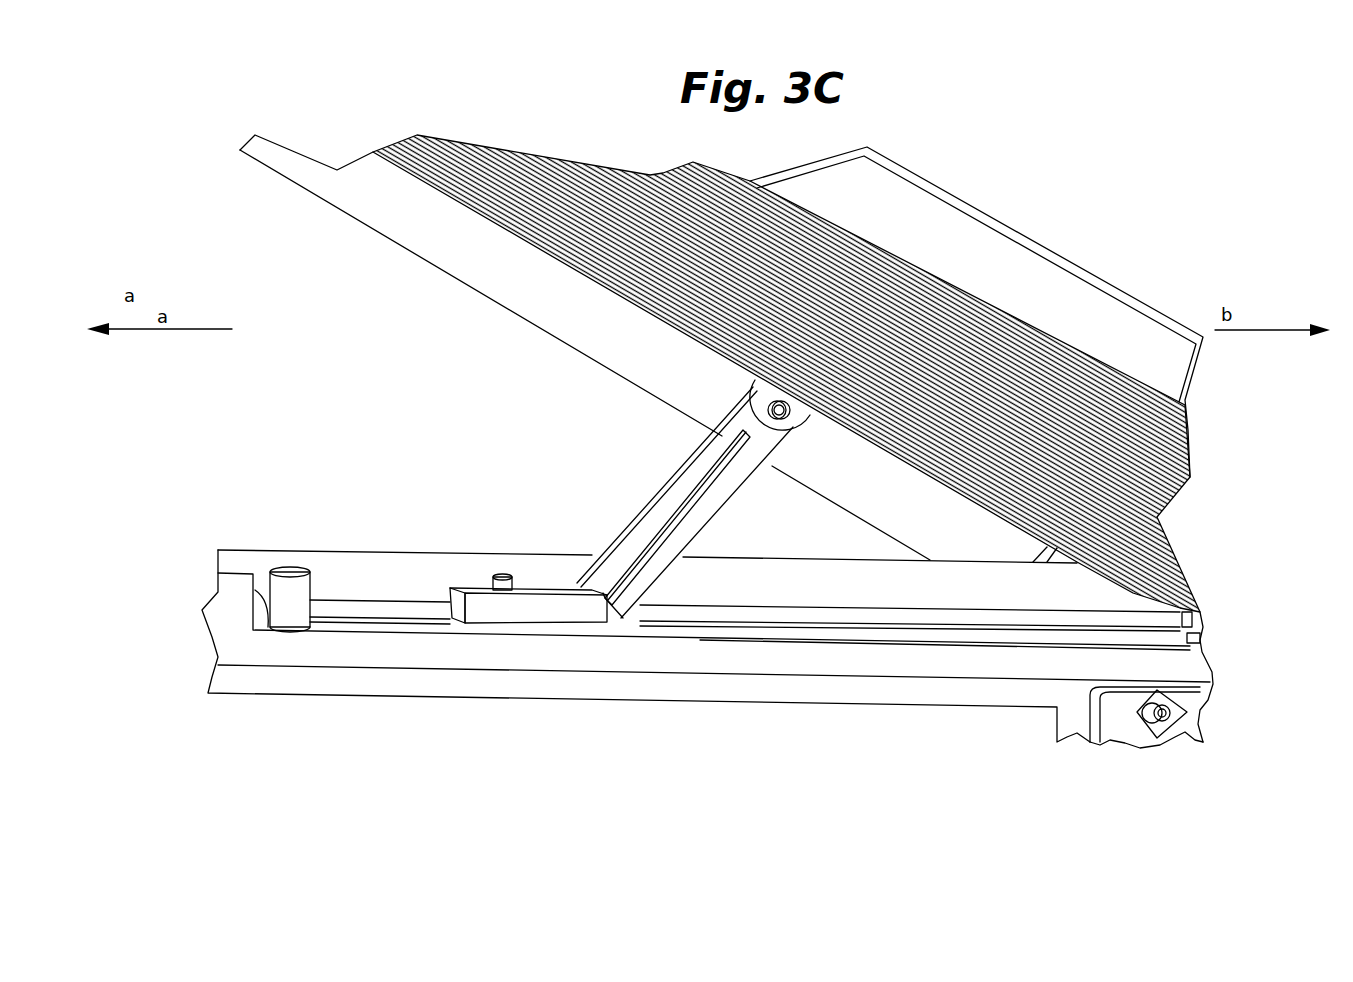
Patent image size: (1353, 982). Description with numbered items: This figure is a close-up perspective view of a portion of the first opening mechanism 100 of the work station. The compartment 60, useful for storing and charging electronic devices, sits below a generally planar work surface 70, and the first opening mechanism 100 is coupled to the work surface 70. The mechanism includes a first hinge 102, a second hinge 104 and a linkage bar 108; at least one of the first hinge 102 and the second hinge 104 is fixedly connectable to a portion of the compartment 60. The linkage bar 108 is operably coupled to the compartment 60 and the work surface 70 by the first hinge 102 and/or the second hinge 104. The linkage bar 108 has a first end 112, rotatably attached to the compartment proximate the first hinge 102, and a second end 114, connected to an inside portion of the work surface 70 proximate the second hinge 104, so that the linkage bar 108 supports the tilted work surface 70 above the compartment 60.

The compartment 60 is at (928, 690).
The work surface 70 is at (945, 198).
The first opening mechanism 100 is at (556, 500).
The first hinge 102 is at (603, 600).
The second hinge 104 is at (768, 411).
The linkage bar 108 is at (662, 490).
The first end 112 is at (590, 585).
The second end 114 is at (752, 388).